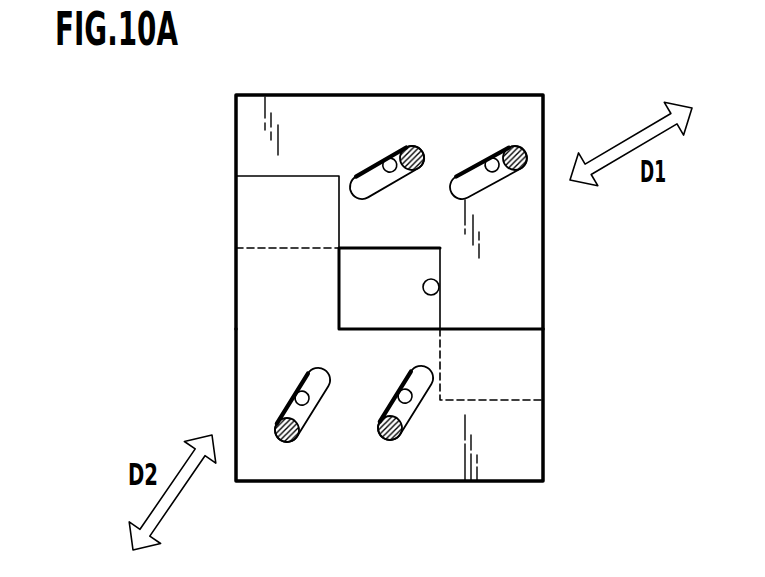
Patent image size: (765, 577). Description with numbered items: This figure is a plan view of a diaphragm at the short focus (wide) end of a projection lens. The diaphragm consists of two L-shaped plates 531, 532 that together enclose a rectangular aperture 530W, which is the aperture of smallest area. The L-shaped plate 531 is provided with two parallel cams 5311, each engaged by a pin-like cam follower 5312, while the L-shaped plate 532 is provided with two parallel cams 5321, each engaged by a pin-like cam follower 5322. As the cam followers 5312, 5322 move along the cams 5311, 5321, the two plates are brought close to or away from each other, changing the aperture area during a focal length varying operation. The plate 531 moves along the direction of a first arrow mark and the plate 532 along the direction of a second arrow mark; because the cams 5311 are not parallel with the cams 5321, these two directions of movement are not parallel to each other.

The L-shaped plate 531 is at (450, 108).
The L-shaped plate 532 is at (503, 462).
The rectangular aperture 530W is at (440, 275).
The cam 5311 is at (380, 158).
The cam follower 5312 is at (408, 146).
The cam 5321 is at (298, 392).
The cam follower 5322 is at (281, 442).